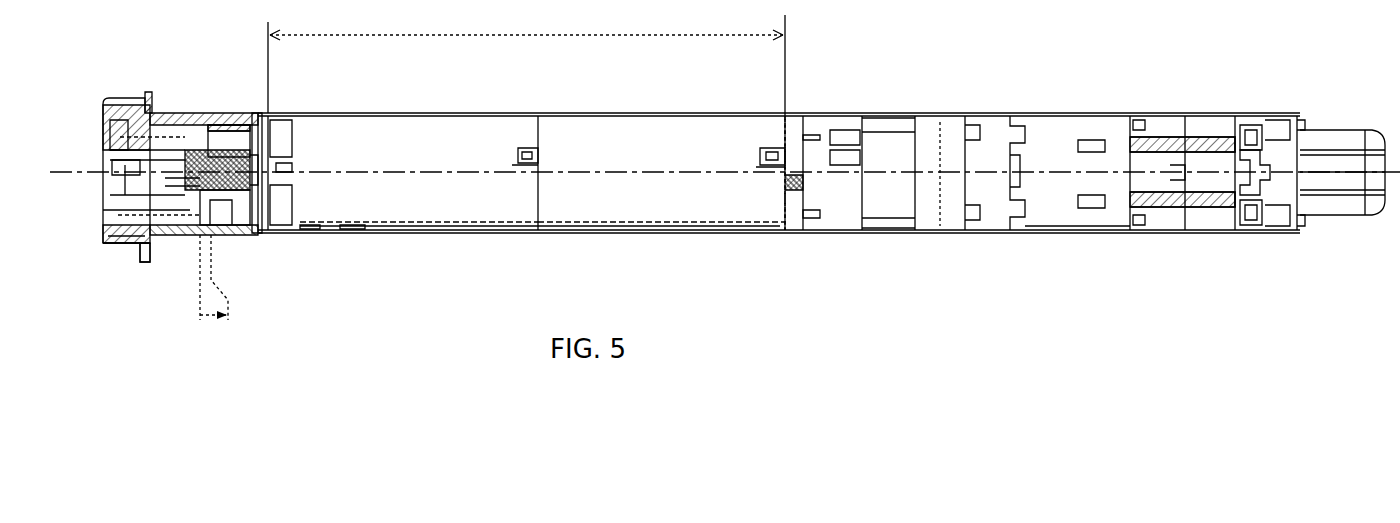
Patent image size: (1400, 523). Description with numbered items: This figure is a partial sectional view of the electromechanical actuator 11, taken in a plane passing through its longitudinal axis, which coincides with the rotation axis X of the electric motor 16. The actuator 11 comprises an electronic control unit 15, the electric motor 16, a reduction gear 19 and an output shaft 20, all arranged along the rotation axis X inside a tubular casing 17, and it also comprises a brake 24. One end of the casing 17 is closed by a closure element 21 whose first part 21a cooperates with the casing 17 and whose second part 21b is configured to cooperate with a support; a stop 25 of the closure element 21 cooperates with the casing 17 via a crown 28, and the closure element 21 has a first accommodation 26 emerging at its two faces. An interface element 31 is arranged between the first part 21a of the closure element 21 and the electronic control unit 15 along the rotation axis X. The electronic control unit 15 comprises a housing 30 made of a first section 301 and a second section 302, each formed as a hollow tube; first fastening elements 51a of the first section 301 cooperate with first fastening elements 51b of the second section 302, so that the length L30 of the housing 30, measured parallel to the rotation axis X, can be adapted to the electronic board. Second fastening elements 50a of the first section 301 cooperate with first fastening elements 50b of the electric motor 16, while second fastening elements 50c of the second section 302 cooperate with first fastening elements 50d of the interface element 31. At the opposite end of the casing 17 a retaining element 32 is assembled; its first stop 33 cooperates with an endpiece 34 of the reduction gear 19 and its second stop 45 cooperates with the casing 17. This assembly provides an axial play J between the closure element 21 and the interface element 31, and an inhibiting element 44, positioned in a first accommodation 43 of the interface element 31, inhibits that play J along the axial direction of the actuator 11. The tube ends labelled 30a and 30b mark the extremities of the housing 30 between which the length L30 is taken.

The electromechanical actuator 11 is at (135, 78).
The closure element 21 is at (126, 177).
The first part of the closure element 21a is at (172, 125).
The second part of the closure element 21b is at (118, 243).
The stop 25 is at (143, 260).
The first accommodation of the closure element 26 is at (172, 170).
The crown 28 is at (207, 118).
The interface element 31 is at (258, 113).
The housing 30 is at (425, 128).
The tube first end 30a is at (300, 132).
The tube second end 30b is at (782, 205).
The first section of the housing 301 is at (380, 210).
The second section of the housing 302 is at (675, 205).
The electronic control unit 15 is at (463, 210).
The first accommodation of the interface element 43 is at (247, 236).
The inhibiting element 44 is at (203, 172).
The second fastening elements of the first section 50a is at (720, 110).
The first fastening elements of the electric motor 50b is at (758, 156).
The second fastening elements of the second section 50c is at (305, 280).
The first fastening elements of the interface element 50d is at (303, 235).
The first fastening elements of the first section 51a is at (548, 109).
The first fastening elements of the second section 51b is at (512, 158).
The electric motor 16 is at (835, 215).
The casing 17 is at (912, 116).
The reduction gear 19 is at (1160, 218).
The output shaft 20 is at (1352, 190).
The brake 24 is at (1057, 118).
The retaining element 32 is at (1278, 205).
The first stop 33 is at (1243, 178).
The endpiece 34 is at (1238, 118).
The second stop 45 is at (1297, 114).
The length of the housing L30 is at (526, 119).
The play J is at (214, 295).
The rotation axis X is at (947, 118).